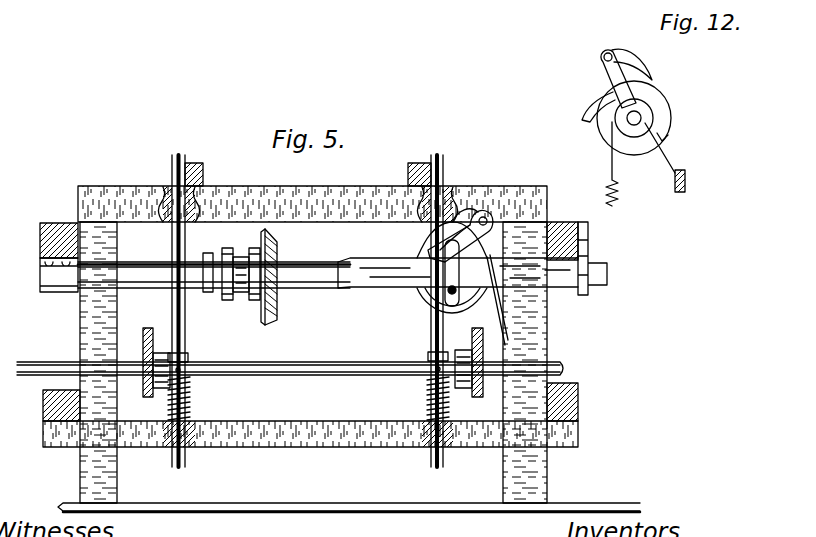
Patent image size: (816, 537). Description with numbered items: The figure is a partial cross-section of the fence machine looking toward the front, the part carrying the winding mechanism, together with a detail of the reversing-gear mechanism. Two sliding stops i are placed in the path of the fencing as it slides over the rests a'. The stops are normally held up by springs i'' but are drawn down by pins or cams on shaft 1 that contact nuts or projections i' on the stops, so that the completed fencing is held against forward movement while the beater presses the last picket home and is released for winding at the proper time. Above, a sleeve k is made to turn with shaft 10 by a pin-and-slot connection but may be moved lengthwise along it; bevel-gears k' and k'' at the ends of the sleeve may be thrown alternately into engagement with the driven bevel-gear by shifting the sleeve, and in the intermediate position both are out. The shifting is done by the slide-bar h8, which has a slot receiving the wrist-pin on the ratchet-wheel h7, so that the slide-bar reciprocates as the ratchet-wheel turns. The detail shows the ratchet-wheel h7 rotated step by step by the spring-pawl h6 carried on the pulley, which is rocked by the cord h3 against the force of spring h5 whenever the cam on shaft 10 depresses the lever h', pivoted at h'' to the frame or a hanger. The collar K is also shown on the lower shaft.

In FIG. 5, the sliding stop i is at (302, 309).
In FIG. 5, the rest a' is at (307, 187).
In FIG. 5, the sleeve k is at (214, 286).
In FIG. 5, the shaft 10 is at (195, 282).
In FIG. 5, the bevel-gear k'' is at (241, 263).
In FIG. 5, the bevel-gear k' is at (277, 282).
In FIG. 5, the slide-bar h8 is at (458, 267).
In FIG. 5, the spring-pawl h6 is at (484, 217).
In FIG. 12, the spring-pawl h6 is at (626, 72).
In FIG. 5, the ratchet-wheel h7 is at (496, 289).
In FIG. 12, the ratchet-wheel h7 is at (661, 101).
In FIG. 5, the shaft 1 is at (290, 379).
In FIG. 5, the collar disc K is at (308, 362).
In FIG. 5, the nut or projection i' is at (308, 351).
In FIG. 5, the spring i'' is at (308, 390).
In FIG. 12, the pivot h'' is at (649, 118).
In FIG. 12, the cord h3 is at (686, 151).
In FIG. 12, the lever h' is at (674, 157).
In FIG. 12, the spring h5 is at (621, 164).